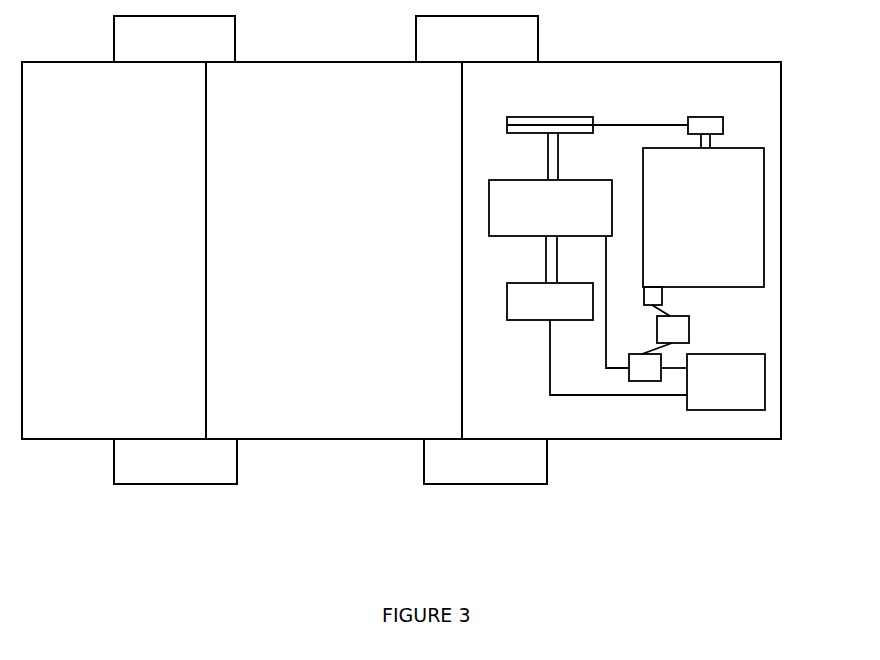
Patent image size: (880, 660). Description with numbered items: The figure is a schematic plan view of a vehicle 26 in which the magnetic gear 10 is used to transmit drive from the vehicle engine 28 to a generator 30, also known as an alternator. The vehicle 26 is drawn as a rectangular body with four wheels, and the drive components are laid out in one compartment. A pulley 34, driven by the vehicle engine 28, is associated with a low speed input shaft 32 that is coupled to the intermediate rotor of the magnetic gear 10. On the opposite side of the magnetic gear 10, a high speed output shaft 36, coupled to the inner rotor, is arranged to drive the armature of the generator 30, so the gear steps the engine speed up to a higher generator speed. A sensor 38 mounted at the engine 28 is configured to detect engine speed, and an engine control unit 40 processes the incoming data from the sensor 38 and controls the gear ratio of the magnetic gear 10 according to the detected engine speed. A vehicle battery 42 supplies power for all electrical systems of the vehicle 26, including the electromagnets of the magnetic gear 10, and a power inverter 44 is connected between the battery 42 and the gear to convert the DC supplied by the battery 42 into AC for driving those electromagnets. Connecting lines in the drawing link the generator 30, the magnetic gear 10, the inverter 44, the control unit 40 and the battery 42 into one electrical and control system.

The magnetic gear 10 is at (599, 192).
The vehicle 26 is at (618, 541).
The vehicle engine 28 is at (723, 163).
The generator 30 is at (571, 303).
The low speed input shaft 32 is at (548, 172).
The pulley 34 is at (570, 125).
The high speed output shaft 36 is at (547, 253).
The sensor 38 is at (662, 297).
The engine control unit 40 is at (679, 333).
The vehicle battery 42 is at (740, 395).
The power inverter 44 is at (643, 370).